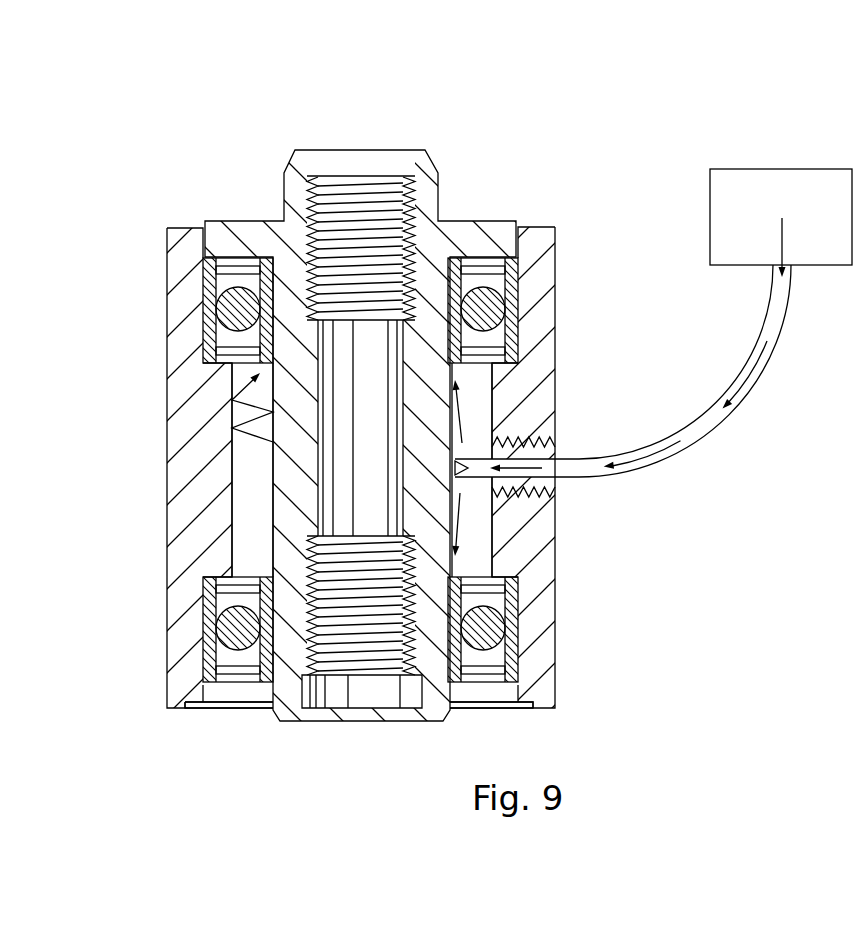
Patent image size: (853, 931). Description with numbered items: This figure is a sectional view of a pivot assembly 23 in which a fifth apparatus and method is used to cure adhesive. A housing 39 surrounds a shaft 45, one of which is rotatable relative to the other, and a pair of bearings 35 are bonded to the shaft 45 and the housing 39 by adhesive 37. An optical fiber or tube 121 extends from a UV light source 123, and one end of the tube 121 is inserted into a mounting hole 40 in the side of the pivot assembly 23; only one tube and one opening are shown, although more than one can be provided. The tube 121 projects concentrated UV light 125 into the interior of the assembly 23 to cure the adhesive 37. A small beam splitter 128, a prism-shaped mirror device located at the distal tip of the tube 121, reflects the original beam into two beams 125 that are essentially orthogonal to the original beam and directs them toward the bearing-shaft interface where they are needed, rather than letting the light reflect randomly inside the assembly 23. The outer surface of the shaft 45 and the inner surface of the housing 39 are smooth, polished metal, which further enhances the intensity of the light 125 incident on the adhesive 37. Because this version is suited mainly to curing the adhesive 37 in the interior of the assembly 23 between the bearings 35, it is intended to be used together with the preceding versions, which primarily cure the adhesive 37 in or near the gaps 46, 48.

The pivot assembly 23 is at (114, 235).
The bearings 35 is at (507, 297).
The adhesive 37 is at (270, 575).
The housing 39 is at (176, 482).
The mounting hole 40 is at (560, 453).
The shaft 45 is at (442, 173).
The gap 46 is at (217, 595).
The gap 48 is at (190, 635).
The optical fiber or tube 121 is at (700, 442).
The UV light source 123 is at (760, 180).
The UV light beams 125 is at (457, 410).
The beam splitter 128 is at (465, 472).